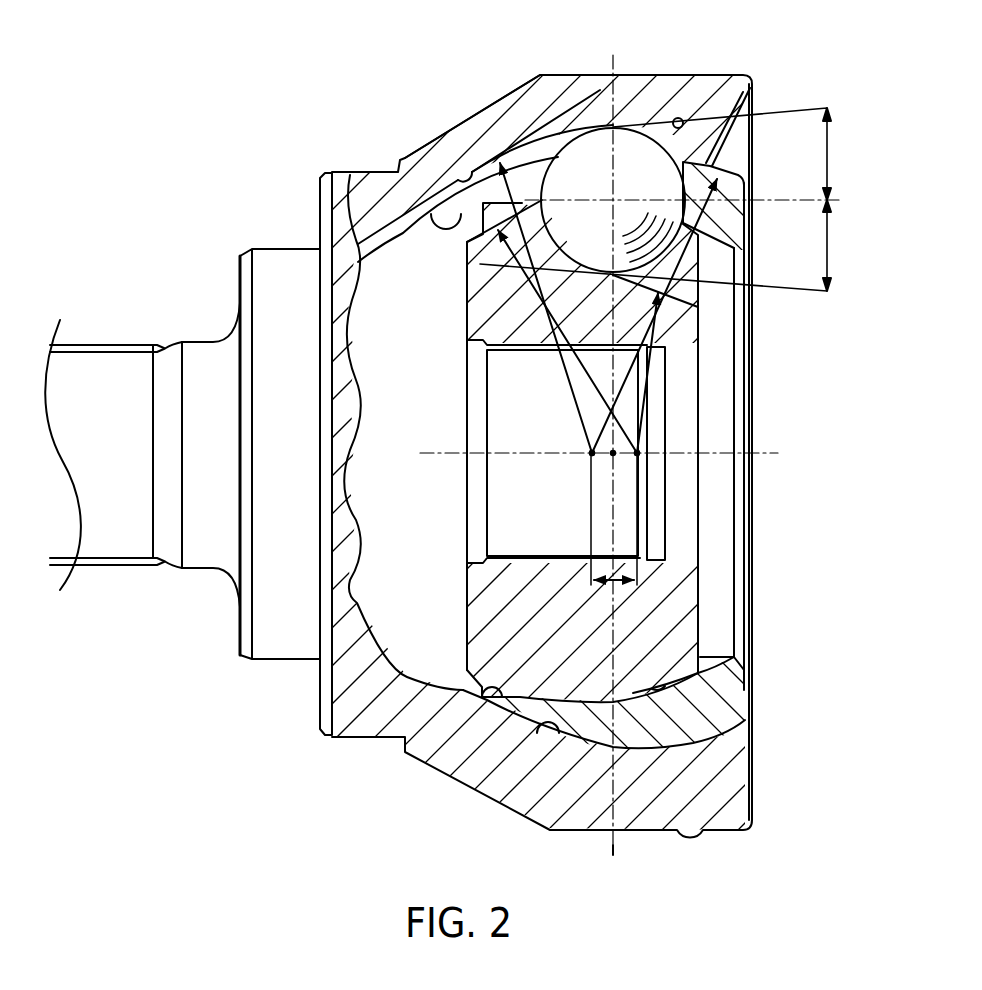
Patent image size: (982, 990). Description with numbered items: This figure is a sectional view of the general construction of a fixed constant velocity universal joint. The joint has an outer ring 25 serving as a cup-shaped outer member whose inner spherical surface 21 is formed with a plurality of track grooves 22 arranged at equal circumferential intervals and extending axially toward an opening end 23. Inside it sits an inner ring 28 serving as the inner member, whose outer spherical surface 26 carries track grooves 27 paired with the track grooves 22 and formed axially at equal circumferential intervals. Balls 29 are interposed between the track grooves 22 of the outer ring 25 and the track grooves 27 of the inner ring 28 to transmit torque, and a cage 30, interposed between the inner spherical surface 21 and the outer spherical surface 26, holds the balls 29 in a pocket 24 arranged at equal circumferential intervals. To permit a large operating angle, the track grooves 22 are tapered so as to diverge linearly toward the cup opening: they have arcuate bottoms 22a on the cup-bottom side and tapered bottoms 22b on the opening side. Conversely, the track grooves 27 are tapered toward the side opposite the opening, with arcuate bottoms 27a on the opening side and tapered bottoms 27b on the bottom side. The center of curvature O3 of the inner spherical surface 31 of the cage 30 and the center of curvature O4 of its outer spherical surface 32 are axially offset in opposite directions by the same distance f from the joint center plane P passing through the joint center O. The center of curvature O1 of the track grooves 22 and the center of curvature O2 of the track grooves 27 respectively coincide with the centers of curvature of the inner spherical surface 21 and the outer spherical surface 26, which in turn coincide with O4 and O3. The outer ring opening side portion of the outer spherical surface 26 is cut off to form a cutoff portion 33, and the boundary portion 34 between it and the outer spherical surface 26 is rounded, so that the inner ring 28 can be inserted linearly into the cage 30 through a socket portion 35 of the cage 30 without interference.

The inner spherical surface 21 is at (380, 262).
The track grooves 22 is at (713, 127).
The arcuate bottoms 22a is at (455, 187).
The tapered bottoms 22b is at (675, 120).
The opening end 23 is at (747, 100).
The pocket 24 is at (683, 176).
The outer ring 25 is at (493, 102).
The outer spherical surface 26 is at (483, 685).
The track grooves 27 is at (692, 284).
The arcuate bottoms 27a is at (692, 294).
The tapered bottoms 27b is at (500, 268).
The inner ring 28 is at (477, 603).
The balls 29 is at (637, 153).
The cage 30 is at (738, 224).
The inner spherical surface 31 is at (703, 672).
The outer spherical surface 32 is at (727, 733).
The cutoff portion 33 is at (690, 676).
The boundary portion 34 is at (663, 686).
The socket portion 35 is at (482, 687).
The joint center O is at (611, 458).
The center of curvature of the track grooves of the outer ring O1 is at (641, 456).
The center of curvature of the track grooves of the inner ring O2 is at (588, 457).
The center of curvature of the inner spherical surface of the cage O3 is at (592, 453).
The center of curvature of the outer spherical surface of the cage O4 is at (637, 453).
The offset distance f is at (632, 583).
The joint center plane P is at (615, 852).